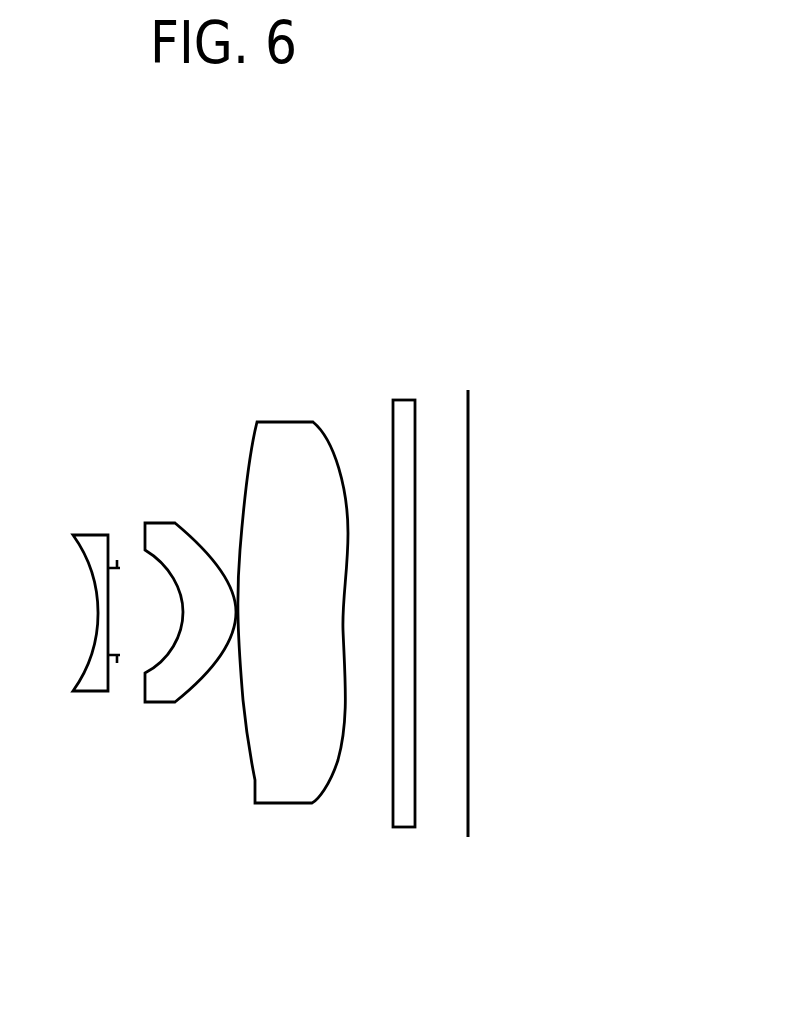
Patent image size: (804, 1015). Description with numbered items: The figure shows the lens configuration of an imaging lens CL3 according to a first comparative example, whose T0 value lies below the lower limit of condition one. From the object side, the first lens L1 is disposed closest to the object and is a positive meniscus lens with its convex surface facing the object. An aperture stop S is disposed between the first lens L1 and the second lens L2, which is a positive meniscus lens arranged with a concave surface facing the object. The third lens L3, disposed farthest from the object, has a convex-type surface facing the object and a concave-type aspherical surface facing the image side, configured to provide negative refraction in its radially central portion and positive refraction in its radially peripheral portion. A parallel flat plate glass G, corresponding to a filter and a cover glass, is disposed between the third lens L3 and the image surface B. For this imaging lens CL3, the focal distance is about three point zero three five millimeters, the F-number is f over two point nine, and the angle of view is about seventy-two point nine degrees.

The imaging lens CL3 is at (530, 295).
The first lens L1 is at (88, 691).
The second lens L2 is at (158, 702).
The third lens L3 is at (287, 803).
The aperture stop S is at (122, 563).
The parallel flat plate glass G is at (396, 401).
The image surface B is at (467, 440).